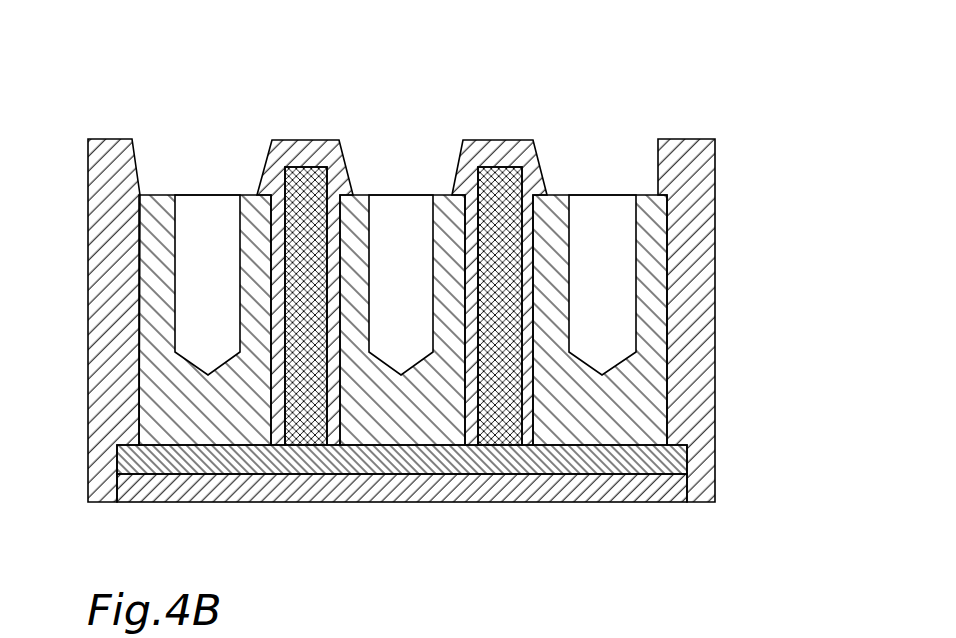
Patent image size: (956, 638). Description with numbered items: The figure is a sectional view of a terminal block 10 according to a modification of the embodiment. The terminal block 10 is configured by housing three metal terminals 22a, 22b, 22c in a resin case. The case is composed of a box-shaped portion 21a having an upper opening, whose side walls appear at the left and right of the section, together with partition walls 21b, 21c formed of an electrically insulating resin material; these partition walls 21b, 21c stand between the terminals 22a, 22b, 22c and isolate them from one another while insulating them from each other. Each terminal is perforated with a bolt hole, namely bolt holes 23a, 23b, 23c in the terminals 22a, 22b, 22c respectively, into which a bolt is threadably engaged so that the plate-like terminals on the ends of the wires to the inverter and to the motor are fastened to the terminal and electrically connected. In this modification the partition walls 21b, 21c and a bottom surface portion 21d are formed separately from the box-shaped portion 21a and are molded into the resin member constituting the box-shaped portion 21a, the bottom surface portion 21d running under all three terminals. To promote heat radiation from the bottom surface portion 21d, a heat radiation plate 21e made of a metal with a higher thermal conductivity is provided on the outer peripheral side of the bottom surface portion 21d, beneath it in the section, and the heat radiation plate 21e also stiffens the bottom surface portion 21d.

The terminal block 10 is at (678, 88).
The box-shaped portion 21a is at (715, 275).
The partition wall 21b is at (311, 166).
The partition wall 21c is at (505, 166).
The bottom surface portion 21d is at (583, 473).
The heat radiation plate 21e is at (490, 502).
The terminal 22a is at (157, 193).
The terminal 22b is at (353, 193).
The terminal 22c is at (546, 193).
The bolt hole 23a is at (213, 193).
The bolt hole 23b is at (408, 193).
The bolt hole 23c is at (600, 193).